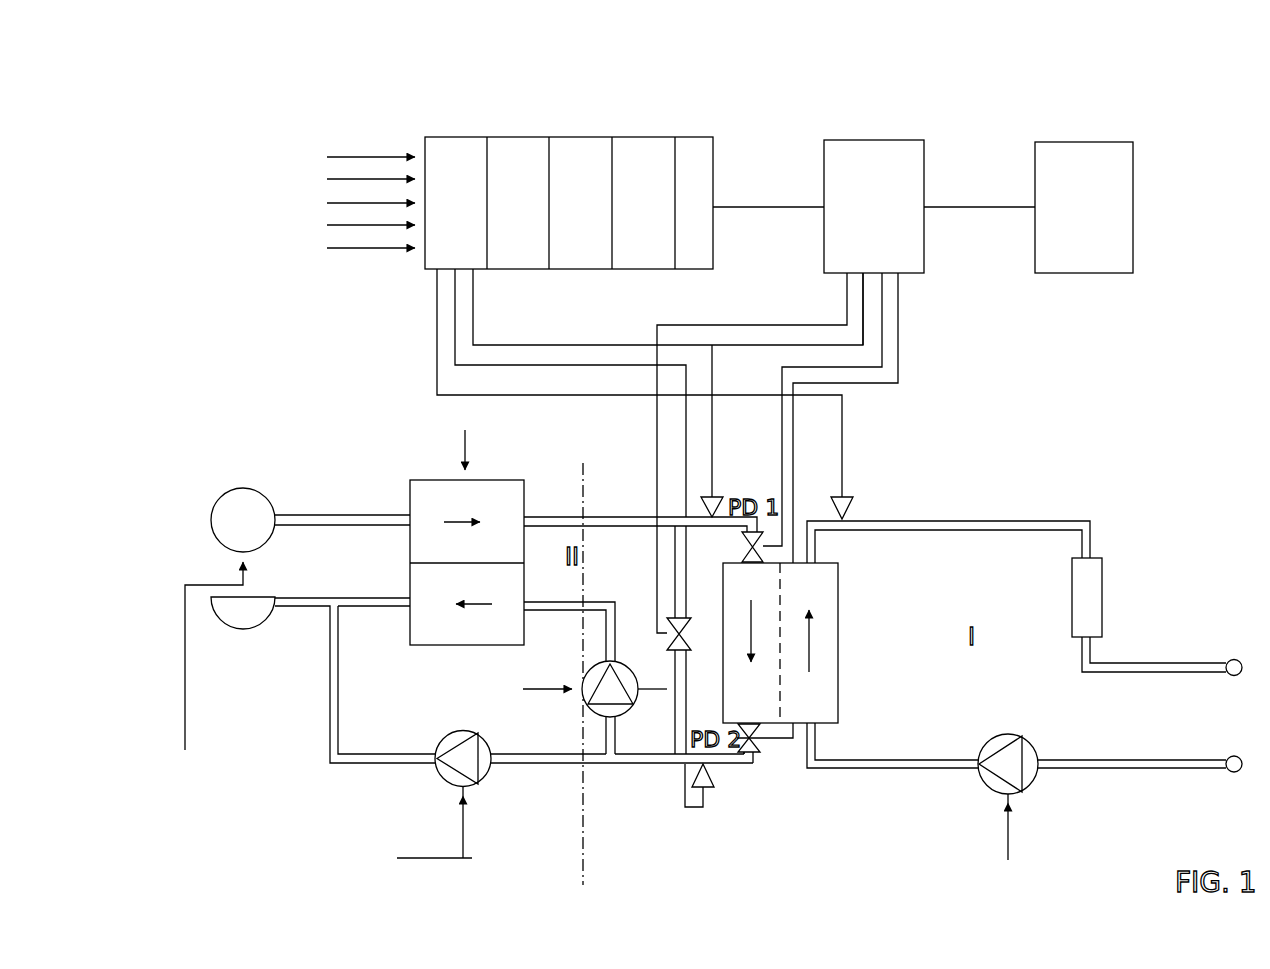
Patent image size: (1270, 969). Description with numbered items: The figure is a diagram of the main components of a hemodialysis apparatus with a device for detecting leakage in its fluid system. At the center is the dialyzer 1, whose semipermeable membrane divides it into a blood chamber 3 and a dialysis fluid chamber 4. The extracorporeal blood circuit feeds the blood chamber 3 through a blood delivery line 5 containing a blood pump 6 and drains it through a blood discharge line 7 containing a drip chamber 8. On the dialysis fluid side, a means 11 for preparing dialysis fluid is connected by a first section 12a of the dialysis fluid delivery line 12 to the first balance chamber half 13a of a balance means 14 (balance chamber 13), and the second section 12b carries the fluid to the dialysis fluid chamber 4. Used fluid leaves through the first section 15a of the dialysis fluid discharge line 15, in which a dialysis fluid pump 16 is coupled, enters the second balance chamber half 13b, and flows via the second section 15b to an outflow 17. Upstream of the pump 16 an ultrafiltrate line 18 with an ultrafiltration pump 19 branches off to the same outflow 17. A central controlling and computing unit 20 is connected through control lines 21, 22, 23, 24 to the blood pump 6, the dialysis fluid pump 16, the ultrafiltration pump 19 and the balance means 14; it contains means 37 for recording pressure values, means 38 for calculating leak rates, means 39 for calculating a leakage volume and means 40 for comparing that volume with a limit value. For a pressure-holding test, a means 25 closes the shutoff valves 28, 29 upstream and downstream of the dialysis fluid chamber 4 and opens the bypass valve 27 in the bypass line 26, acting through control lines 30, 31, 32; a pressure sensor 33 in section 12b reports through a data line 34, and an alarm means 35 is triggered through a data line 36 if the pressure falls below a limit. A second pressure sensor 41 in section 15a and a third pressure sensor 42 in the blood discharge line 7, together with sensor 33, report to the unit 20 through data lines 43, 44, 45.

The dialyzer 1 is at (845, 598).
The blood chamber 3 is at (838, 645).
The dialysis fluid chamber 4 is at (724, 640).
The blood delivery line 5 is at (928, 770).
The blood pump 6 is at (1040, 787).
The blood discharge line 7 is at (1000, 535).
The drip chamber 8 is at (1103, 590).
The means for preparing dialysis fluid 11 is at (240, 478).
The dialysis fluid delivery line 12 is at (574, 506).
The first section of the dialysis fluid delivery line 12a is at (345, 528).
The second section of the dialysis fluid delivery line 12b is at (615, 515).
The balance chamber 13 is at (467, 562).
The first balance chamber half 13a is at (497, 480).
The second balance chamber half 13b is at (483, 647).
The balance means 14 is at (552, 483).
The dialysis fluid discharge line 15 is at (642, 773).
The first section of the dialysis fluid discharge line 15a is at (749, 780).
The second section of the dialysis fluid discharge line 15b is at (378, 610).
The dialysis fluid pump 16 is at (625, 660).
The outflow 17 is at (258, 612).
The ultrafiltrate line 18 is at (555, 768).
The ultrafiltration pump 19 is at (443, 785).
The central controlling and computing unit 20 is at (563, 130).
The control line 21 is at (658, 519).
The control line 22 is at (433, 428).
The control line 23 is at (383, 524).
The control line 24 is at (379, 342).
The means for checking the fluid system 25 is at (878, 128).
The bypass line 26 is at (674, 708).
The bypass valve 27 is at (684, 628).
The shutoff valve 28 is at (742, 540).
The shutoff valve 29 is at (757, 760).
The control line 30 is at (847, 290).
The control line 31 is at (896, 300).
The control line 32 is at (898, 328).
The pressure sensor 33 is at (714, 493).
The data line 34 is at (863, 315).
The alarm means 35 is at (1088, 132).
The data line 36 is at (983, 205).
The means for recording the pressure measurement values 37 is at (468, 140).
The means for calculating leak rates 38 is at (530, 140).
The means for calculating a leakage volume 39 is at (592, 140).
The means for comparing the leakage volume with a predetermined limit value 40 is at (654, 140).
The second pressure sensor 41 is at (705, 800).
The third pressure sensor 42 is at (846, 500).
The data line 43 is at (578, 342).
The data line 44 is at (540, 362).
The data line 45 is at (498, 390).